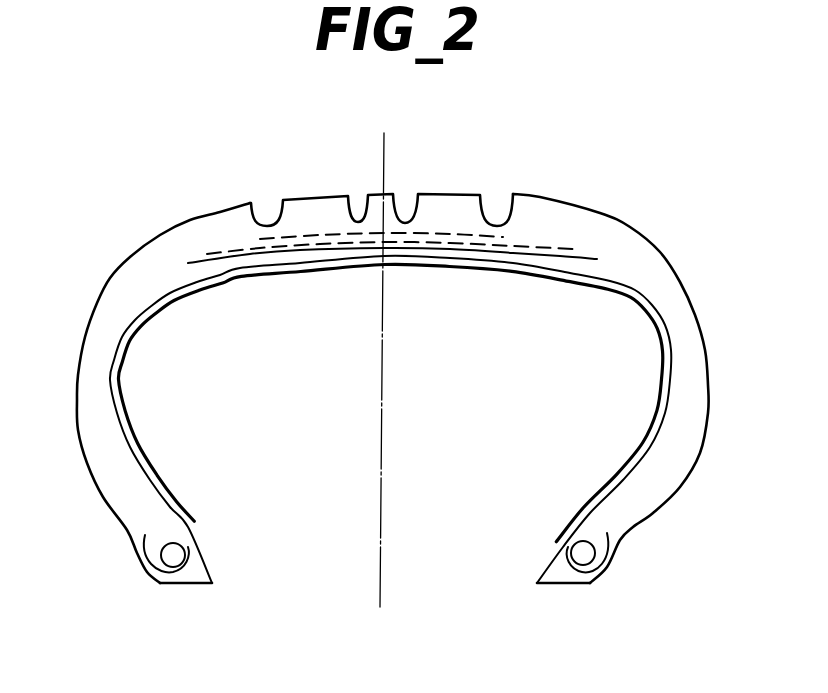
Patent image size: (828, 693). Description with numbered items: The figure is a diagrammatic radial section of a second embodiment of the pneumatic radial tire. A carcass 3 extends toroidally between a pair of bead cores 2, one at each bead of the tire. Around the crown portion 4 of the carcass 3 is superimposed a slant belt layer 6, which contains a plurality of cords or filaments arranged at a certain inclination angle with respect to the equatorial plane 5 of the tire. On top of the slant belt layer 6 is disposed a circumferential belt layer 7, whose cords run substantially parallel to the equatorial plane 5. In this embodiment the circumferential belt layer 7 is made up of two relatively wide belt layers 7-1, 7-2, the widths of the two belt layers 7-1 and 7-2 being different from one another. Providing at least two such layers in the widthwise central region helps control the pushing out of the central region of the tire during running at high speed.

The bead core 2 is at (174, 556).
The carcass 3 is at (135, 319).
The crown portion of the carcass 4 is at (540, 265).
The equatorial plane of the tire 5 is at (381, 525).
The slant belt layer 6 is at (198, 262).
The circumferential belt layer 7 is at (389, 176).
The belt layer 7-1 is at (232, 253).
The belt layer 7-2 is at (298, 237).